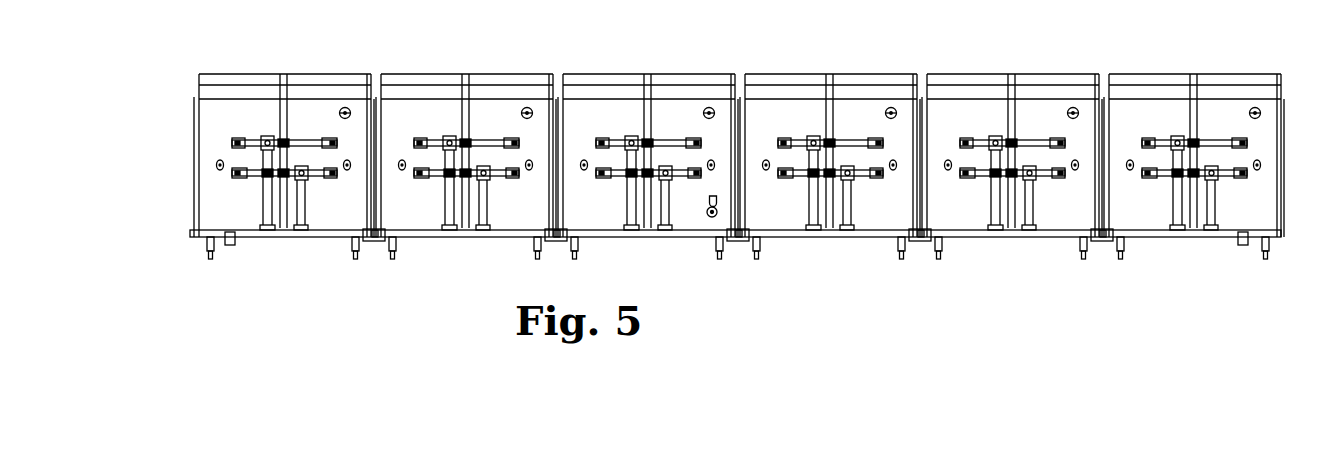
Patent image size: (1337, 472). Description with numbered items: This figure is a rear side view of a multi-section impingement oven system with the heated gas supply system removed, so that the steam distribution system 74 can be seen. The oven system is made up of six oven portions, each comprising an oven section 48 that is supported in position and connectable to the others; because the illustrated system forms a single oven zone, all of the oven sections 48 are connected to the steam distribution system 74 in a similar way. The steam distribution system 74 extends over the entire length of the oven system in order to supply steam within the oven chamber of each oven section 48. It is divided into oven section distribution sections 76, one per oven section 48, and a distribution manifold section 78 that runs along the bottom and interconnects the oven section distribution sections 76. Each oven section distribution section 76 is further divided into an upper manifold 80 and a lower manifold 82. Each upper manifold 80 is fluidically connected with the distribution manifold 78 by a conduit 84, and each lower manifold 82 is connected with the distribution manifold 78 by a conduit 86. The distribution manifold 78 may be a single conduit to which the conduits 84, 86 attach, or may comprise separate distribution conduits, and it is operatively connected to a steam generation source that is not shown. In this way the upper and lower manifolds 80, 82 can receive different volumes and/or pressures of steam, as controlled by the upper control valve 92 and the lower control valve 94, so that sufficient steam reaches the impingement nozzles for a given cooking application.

The oven section 48 is at (306, 112).
The steam distribution system 74 is at (702, 264).
The oven section distribution section 76 is at (250, 186).
The distribution manifold section 78 is at (488, 238).
The upper manifold 80 is at (253, 138).
The lower manifold 82 is at (320, 167).
The conduit 84 is at (262, 205).
The conduit 86 is at (306, 200).
The upper control valve 92 is at (706, 216).
The lower control valve 94 is at (745, 223).